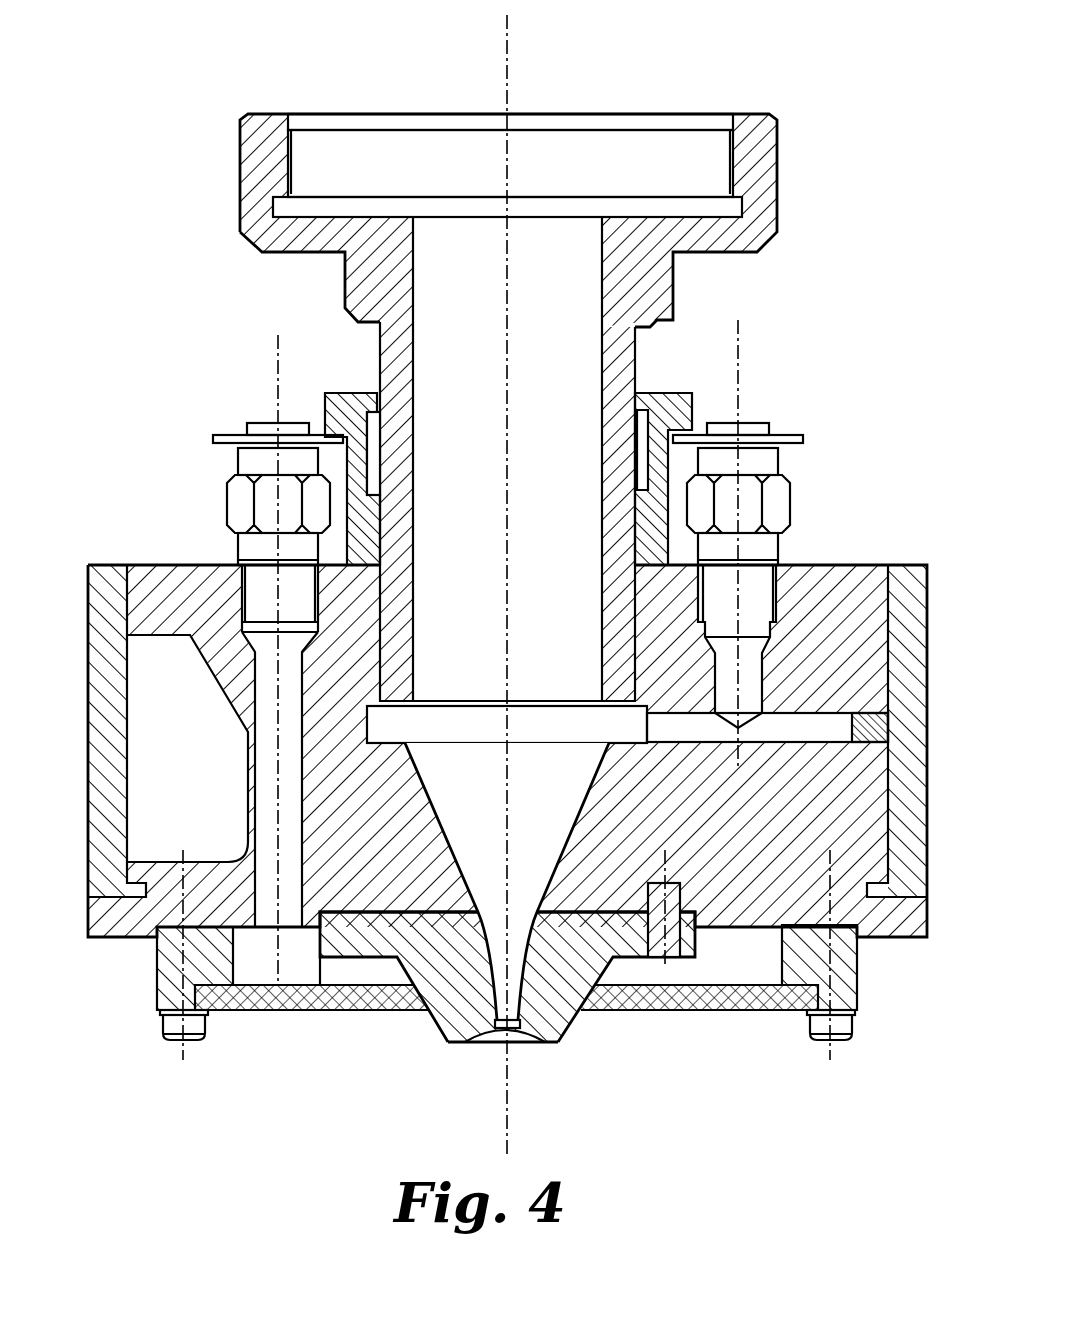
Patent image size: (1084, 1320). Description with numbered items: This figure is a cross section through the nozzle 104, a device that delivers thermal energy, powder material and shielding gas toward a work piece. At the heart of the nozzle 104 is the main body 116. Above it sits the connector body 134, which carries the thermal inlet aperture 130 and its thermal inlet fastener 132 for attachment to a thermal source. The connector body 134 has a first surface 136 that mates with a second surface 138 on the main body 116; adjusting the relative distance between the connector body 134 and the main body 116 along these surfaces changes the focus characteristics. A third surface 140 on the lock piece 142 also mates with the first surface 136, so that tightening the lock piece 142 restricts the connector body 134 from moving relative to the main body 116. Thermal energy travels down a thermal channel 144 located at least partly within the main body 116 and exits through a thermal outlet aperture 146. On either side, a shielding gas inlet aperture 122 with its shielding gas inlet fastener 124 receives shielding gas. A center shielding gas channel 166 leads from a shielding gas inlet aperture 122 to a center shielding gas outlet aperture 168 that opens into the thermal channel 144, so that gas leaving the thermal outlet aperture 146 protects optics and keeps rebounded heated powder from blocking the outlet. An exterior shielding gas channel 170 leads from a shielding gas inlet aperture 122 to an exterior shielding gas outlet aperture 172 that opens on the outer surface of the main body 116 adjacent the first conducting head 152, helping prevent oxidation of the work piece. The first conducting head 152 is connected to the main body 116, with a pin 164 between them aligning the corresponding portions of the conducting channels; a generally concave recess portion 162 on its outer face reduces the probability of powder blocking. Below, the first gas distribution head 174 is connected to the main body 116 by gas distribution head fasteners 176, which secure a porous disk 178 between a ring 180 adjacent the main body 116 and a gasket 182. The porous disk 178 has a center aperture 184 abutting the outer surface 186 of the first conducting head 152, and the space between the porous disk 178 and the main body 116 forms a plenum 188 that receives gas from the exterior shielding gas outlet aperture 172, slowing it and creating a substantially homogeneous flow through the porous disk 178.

The nozzle 104 is at (261, 64).
The main body 116 is at (115, 565).
The shielding gas inlet aperture 122 is at (258, 420).
The shielding gas inlet fastener 124 is at (247, 462).
The thermal inlet aperture 130 is at (573, 114).
The thermal inlet fastener 132 is at (727, 157).
The connector body 134 is at (767, 143).
The first surface 136 is at (600, 592).
The second surface 138 is at (602, 637).
The third surface 140 is at (600, 493).
The lock piece 142 is at (680, 390).
The thermal channel 144 is at (450, 830).
The thermal outlet aperture 146 is at (503, 1025).
The first conducting head 152 is at (575, 1030).
The recess portion 162 is at (525, 1040).
The pin 164 is at (668, 957).
The center shielding gas channel 166 is at (740, 688).
The center shielding gas outlet aperture 168 is at (672, 737).
The exterior shielding gas channel 170 is at (276, 816).
The exterior shielding gas outlet aperture 172 is at (270, 928).
The first gas distribution head 174 is at (157, 972).
The gas distribution head fastener 176 is at (168, 1037).
The porous disk 178 is at (238, 1010).
The ring 180 is at (782, 947).
The gasket 182 is at (853, 1012).
The center aperture 184 is at (388, 1010).
The outer surface 186 is at (326, 1010).
The plenum 188 is at (307, 973).